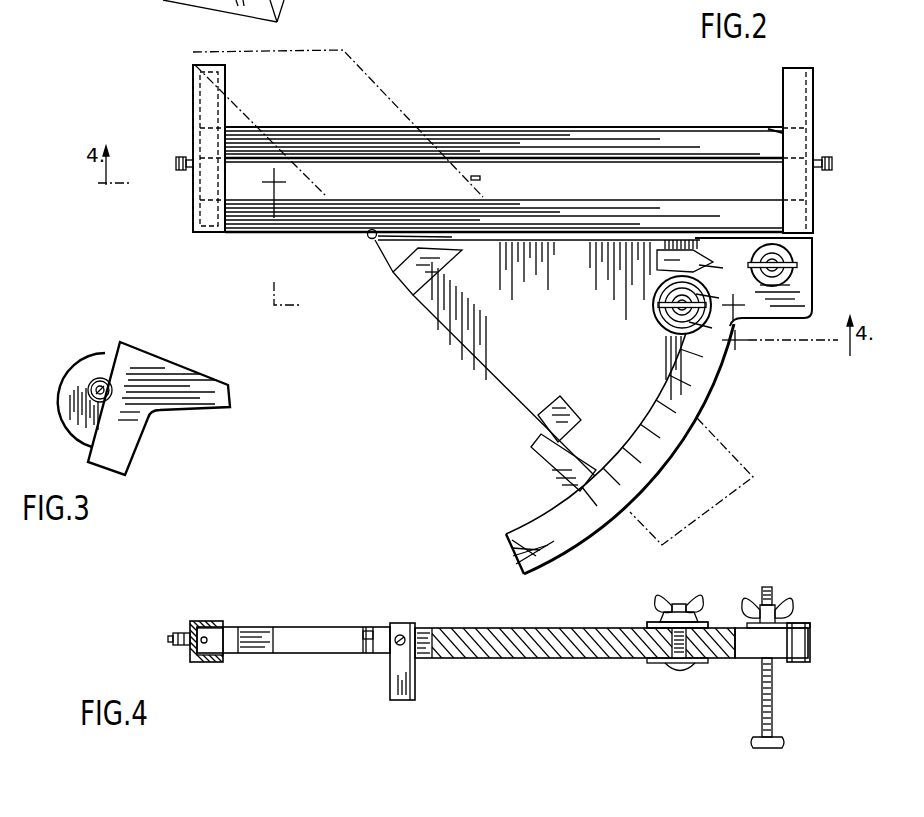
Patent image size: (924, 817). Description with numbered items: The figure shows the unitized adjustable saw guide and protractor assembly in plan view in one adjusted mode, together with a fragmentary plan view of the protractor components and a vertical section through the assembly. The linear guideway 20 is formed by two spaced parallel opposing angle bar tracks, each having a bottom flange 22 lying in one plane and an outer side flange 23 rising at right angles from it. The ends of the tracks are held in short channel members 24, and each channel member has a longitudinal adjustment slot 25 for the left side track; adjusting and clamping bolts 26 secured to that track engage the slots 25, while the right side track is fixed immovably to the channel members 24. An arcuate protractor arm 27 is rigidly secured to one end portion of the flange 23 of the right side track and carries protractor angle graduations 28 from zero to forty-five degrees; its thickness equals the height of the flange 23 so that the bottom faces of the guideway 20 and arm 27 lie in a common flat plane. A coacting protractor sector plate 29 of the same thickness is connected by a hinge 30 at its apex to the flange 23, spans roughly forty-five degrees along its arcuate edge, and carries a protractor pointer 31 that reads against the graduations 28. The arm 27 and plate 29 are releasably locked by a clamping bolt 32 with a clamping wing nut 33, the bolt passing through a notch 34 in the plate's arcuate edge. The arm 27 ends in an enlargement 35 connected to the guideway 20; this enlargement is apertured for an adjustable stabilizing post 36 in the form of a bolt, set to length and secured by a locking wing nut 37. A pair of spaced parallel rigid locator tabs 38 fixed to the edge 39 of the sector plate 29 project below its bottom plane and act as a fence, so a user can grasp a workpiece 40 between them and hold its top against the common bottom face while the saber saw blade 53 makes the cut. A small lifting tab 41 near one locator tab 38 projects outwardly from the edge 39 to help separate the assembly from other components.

In FIG. 2, the linear guideway 20 is at (587, 126).
In FIG. 4, the linear guideway 20 is at (300, 627).
In FIG. 2, the bottom flange 22 is at (552, 208).
In FIG. 2, the outer side flange 23 is at (521, 104).
In FIG. 4, the outer side flange 23 is at (258, 628).
In FIG. 2, the channel member 24 is at (207, 98).
In FIG. 4, the channel member 24 is at (213, 625).
In FIG. 2, the longitudinal adjustment slot 25 is at (110, 0).
In FIG. 2, the adjusting and clamping bolt 26 is at (176, 163).
In FIG. 4, the adjusting and clamping bolt 26 is at (175, 638).
In FIG. 2, the arcuate protractor arm 27 is at (707, 383).
In FIG. 3, the arcuate protractor arm 27 is at (125, 458).
In FIG. 4, the arcuate protractor arm 27 is at (724, 652).
In FIG. 2, the protractor angle graduations 28 is at (660, 406).
In FIG. 2, the protractor sector plate 29 is at (550, 327).
In FIG. 3, the protractor sector plate 29 is at (64, 404).
In FIG. 4, the protractor sector plate 29 is at (556, 653).
In FIG. 2, the hinge 30 is at (370, 242).
In FIG. 4, the hinge 30 is at (368, 625).
In FIG. 2, the protractor pointer 31 is at (683, 240).
In FIG. 2, the clamping bolt 32 is at (663, 318).
In FIG. 3, the clamping bolt 32 is at (101, 381).
In FIG. 4, the clamping bolt 32 is at (680, 664).
In FIG. 2, the clamping wing nut 33 is at (656, 305).
In FIG. 4, the clamping wing nut 33 is at (694, 602).
In FIG. 3, the notch 34 is at (108, 397).
In FIG. 4, the notch 34 is at (676, 642).
In FIG. 2, the enlargement 35 is at (793, 308).
In FIG. 4, the enlargement 35 is at (790, 648).
In FIG. 2, the stabilizing post 36 is at (786, 262).
In FIG. 4, the stabilizing post 36 is at (774, 710).
In FIG. 2, the locking wing nut 37 is at (797, 270).
In FIG. 4, the locking wing nut 37 is at (780, 600).
In FIG. 2, the locator tab 38 is at (415, 278).
In FIG. 4, the locator tab 38 is at (399, 700).
In FIG. 2, the edge 39 is at (513, 392).
In FIG. 2, the workpiece 40 is at (357, 78).
In FIG. 2, the lifting tab 41 is at (550, 452).
In FIG. 2, the saber saw blade 53 is at (484, 178).